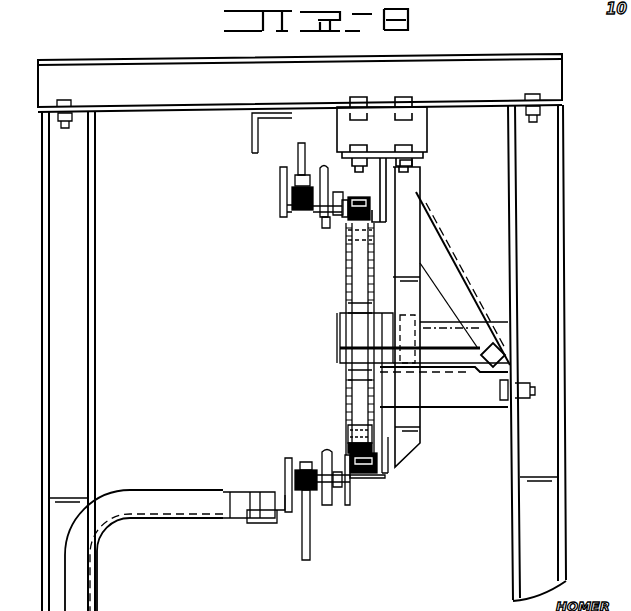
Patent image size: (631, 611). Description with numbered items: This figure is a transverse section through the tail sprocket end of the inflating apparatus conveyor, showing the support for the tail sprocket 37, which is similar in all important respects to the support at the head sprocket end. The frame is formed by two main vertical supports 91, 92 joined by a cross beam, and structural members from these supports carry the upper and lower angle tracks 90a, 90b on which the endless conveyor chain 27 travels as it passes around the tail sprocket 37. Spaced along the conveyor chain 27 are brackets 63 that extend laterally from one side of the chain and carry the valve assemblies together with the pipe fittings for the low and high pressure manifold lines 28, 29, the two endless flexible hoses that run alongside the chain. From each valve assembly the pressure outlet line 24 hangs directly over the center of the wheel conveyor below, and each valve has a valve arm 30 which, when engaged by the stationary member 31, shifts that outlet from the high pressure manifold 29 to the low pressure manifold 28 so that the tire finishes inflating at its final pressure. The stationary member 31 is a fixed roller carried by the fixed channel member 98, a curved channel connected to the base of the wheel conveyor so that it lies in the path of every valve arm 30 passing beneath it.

The outlet hose 24 is at (305, 162).
The conveyor chain 27 is at (356, 198).
The low pressure manifold line 28 is at (322, 462).
The high pressure manifold line 29 is at (340, 450).
The valve arm 30 is at (283, 172).
The stationary member 31 is at (290, 512).
The tail sprocket 37 is at (358, 272).
The bracket 63 is at (352, 488).
The upper angle track 90a is at (350, 223).
The lower angle track 90b is at (383, 476).
The main vertical support 91 is at (83, 452).
The main vertical support 92 is at (553, 323).
The fixed channel member 98 is at (201, 515).